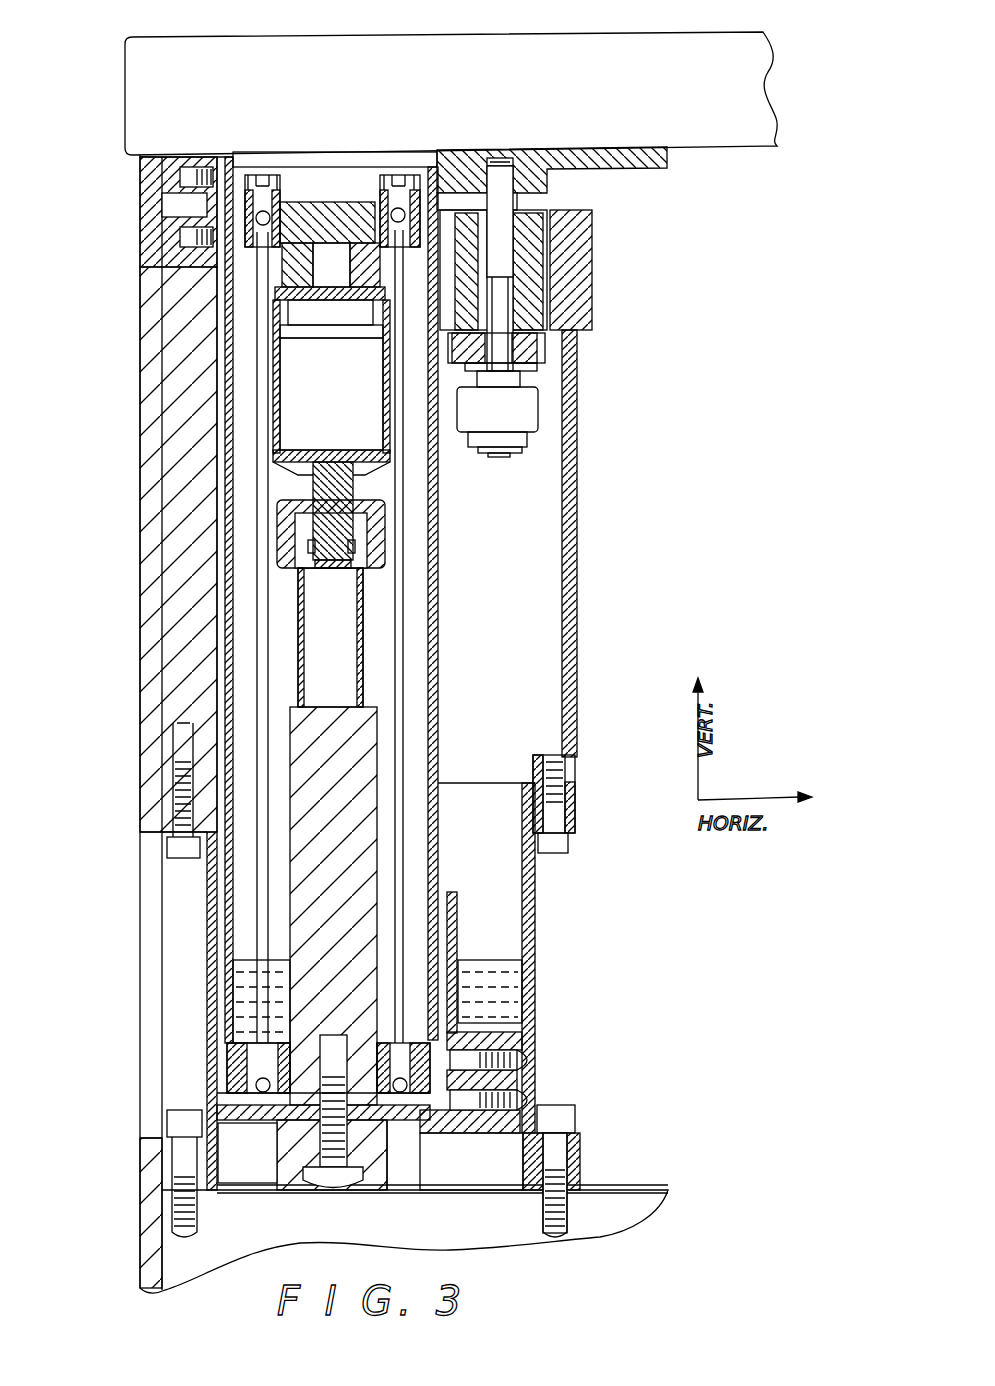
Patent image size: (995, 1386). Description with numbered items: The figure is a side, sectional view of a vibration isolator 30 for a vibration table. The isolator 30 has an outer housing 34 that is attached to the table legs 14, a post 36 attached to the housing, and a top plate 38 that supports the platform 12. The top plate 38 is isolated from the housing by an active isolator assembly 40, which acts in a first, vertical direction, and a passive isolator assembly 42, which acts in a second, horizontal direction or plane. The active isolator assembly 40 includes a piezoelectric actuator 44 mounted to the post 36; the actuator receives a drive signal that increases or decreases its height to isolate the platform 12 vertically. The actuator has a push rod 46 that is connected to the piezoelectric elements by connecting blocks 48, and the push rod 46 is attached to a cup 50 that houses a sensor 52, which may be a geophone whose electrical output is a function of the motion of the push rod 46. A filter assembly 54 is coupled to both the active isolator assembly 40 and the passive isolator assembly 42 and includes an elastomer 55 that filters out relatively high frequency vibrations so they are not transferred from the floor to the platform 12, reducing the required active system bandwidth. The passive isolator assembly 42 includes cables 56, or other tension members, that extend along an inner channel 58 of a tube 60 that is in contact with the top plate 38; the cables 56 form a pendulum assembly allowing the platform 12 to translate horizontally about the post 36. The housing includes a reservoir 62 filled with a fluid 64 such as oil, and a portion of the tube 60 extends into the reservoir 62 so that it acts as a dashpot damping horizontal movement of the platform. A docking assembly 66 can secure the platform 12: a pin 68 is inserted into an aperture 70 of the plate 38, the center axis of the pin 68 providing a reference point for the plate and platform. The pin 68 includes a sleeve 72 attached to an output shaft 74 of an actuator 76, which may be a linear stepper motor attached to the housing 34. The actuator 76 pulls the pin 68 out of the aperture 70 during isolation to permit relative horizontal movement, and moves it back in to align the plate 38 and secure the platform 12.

The platform 12 is at (650, 45).
The table legs 14 is at (150, 1258).
The vibration isolator 30 is at (600, 925).
The outer housing 34 is at (584, 628).
The post 36 is at (357, 850).
The top plate 38 is at (195, 157).
The active isolator assembly 40 is at (384, 572).
The passive isolator assembly 42 is at (438, 755).
The piezoelectric actuator 44 is at (302, 648).
The push rod 46 is at (345, 497).
The connecting blocks 48 is at (305, 565).
The cup 50 is at (275, 428).
The sensor 52 is at (348, 404).
The filter assembly 54 is at (274, 266).
The elastomer 55 is at (293, 255).
The cables 56 is at (404, 697).
The inner channel 58 is at (412, 822).
The tube 60 is at (443, 660).
The reservoir 62 is at (490, 982).
The fluid 64 is at (506, 950).
The docking assembly 66 is at (541, 367).
The pin 68 is at (528, 201).
The aperture 70 is at (527, 172).
The sleeve 72 is at (518, 233).
The output shaft 74 is at (498, 297).
The actuator 76 is at (522, 408).